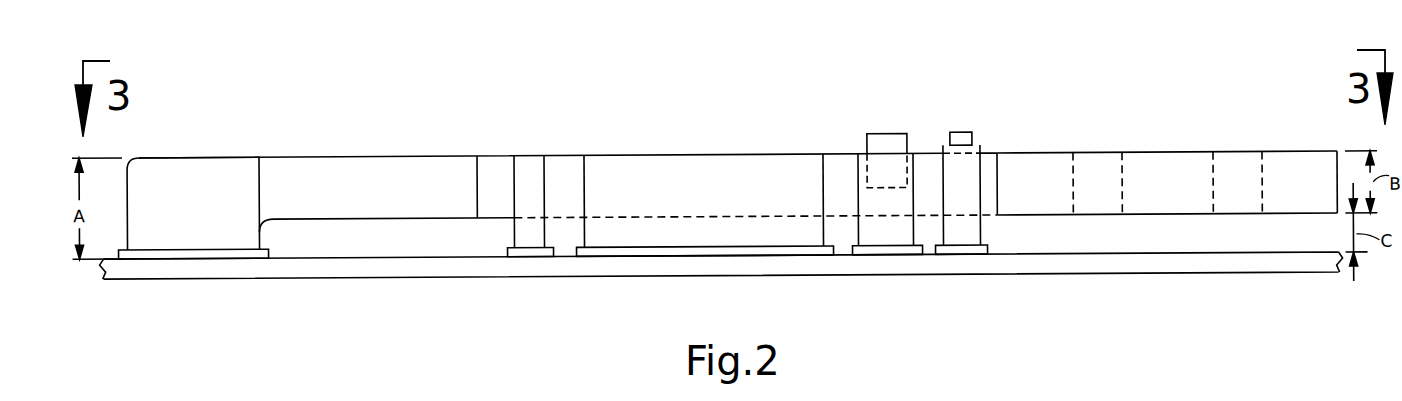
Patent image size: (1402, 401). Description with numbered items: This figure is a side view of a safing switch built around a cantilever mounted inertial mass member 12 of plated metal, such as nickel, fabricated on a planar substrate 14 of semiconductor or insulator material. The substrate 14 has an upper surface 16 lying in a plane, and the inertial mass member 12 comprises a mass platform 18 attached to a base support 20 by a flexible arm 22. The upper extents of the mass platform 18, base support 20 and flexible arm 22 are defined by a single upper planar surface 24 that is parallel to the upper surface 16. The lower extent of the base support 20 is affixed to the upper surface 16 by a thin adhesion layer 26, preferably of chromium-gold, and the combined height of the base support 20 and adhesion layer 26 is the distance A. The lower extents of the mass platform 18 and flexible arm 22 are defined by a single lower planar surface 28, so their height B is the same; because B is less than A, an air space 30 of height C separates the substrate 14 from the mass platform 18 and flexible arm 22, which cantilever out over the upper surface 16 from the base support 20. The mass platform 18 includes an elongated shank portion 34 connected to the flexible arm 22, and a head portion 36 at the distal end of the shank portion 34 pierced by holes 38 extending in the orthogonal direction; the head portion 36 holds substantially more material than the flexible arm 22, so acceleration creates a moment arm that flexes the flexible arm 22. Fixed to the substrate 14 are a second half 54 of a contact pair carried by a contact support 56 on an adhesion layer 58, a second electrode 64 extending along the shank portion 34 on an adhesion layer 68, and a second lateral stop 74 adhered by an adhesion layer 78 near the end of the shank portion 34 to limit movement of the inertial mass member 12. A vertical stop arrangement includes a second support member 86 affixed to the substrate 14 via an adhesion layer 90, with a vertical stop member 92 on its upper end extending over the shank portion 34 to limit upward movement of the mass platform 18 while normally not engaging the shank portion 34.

The inertial mass member 12 is at (363, 140).
The substrate 14 is at (134, 292).
The upper surface 16 is at (358, 259).
The mass platform 18 is at (1163, 145).
The base support 20 is at (160, 166).
The flexible arm 22 is at (371, 213).
The upper planar surface 24 is at (1292, 158).
The adhesion layer 26 is at (231, 256).
The lower planar surface 28 is at (1174, 221).
The air space 30 is at (1058, 264).
The shank portion 34 is at (563, 163).
The head portion 36 is at (1022, 165).
The holes 38 is at (1095, 165).
The second half of second contact pair 54 is at (882, 146).
The contact support 56 is at (867, 241).
The adhesion layer 58 is at (890, 256).
The second electrode 64 is at (700, 243).
The adhesion layer 68 is at (608, 253).
The second lateral stop 74 is at (531, 239).
The adhesion layer 78 is at (527, 253).
The second support member 86 is at (947, 252).
The adhesion layer 90 is at (972, 257).
The vertical stop member 92 is at (958, 146).